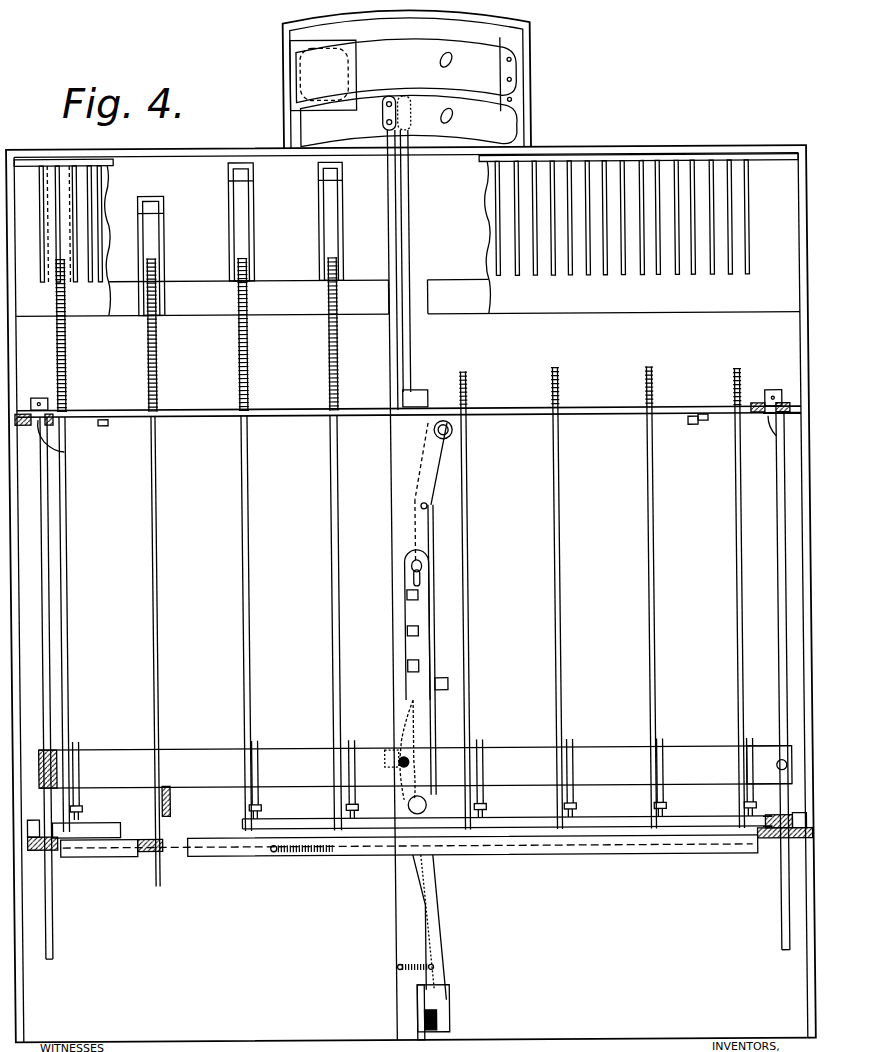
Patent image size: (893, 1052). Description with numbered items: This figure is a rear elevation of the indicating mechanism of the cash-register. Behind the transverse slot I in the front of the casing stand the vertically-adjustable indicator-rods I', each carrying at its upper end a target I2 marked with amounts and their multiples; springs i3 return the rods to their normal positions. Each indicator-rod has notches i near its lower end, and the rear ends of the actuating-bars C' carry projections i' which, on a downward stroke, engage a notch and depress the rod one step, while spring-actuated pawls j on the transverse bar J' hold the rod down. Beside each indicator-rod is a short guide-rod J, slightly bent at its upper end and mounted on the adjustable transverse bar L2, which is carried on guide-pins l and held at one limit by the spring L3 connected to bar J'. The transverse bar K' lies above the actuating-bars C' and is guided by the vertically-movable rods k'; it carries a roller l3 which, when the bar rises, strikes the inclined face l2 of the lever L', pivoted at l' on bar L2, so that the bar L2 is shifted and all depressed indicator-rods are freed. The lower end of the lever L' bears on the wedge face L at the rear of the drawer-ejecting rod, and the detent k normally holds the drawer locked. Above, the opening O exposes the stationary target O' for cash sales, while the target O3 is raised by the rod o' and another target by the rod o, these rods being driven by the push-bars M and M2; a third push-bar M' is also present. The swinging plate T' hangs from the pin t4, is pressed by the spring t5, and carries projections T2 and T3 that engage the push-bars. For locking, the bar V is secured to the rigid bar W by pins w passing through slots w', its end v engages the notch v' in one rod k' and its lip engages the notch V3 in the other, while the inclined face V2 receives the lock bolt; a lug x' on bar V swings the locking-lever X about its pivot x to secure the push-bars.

The slot or opening O is at (407, 79).
The target O3 is at (447, 118).
The stationary plate or target O' is at (384, 585).
The vertically-movable rod o is at (404, 186).
The transverse slot or opening I is at (407, 298).
The target I2 is at (258, 230).
The spring i3 is at (69, 376).
The horizontally-extending rigid bar W is at (184, 412).
The inclined face V2 is at (36, 418).
The notch V3 is at (66, 450).
The pin or screw w is at (400, 434).
The longitudinally-adjustable bar V is at (200, 418).
The end of bar V v is at (769, 419).
The notch v' is at (785, 429).
The slot w' is at (699, 395).
The indicator-rod I' is at (401, 626).
The guide-rod k' is at (415, 686).
The depending lug x' is at (468, 432).
The locking-lever X is at (441, 458).
The pivot x is at (437, 507).
The pin t4 is at (412, 566).
The lateral projection T2 is at (405, 594).
The push-bar M is at (430, 597).
The vertically-movable bar or plate T' is at (380, 631).
The push-bar M' is at (434, 627).
The lateral projection T3 is at (400, 660).
The push-bar M2 is at (418, 668).
The detent k is at (446, 673).
The inclined or wedge face l2 is at (398, 744).
The roller l3 is at (398, 766).
The pivot l' is at (399, 809).
The transverse bar K' is at (415, 755).
The guide-rod J is at (477, 778).
The notch i is at (162, 739).
The actuating-bar C' is at (183, 801).
The projection i' is at (181, 824).
The transverse bar L2 is at (518, 820).
The transverse bar J' is at (437, 862).
The spring-actuated pawl j is at (160, 856).
The guide-pin l is at (417, 820).
The spring L3 is at (310, 856).
The lever or arm L' is at (446, 927).
The spring t5 is at (398, 970).
The inclined or wedge-shaped face L is at (446, 1012).